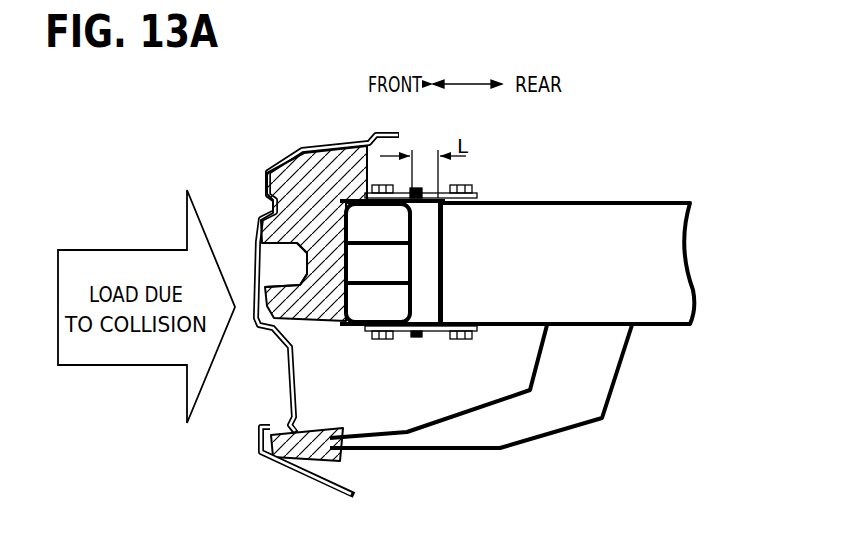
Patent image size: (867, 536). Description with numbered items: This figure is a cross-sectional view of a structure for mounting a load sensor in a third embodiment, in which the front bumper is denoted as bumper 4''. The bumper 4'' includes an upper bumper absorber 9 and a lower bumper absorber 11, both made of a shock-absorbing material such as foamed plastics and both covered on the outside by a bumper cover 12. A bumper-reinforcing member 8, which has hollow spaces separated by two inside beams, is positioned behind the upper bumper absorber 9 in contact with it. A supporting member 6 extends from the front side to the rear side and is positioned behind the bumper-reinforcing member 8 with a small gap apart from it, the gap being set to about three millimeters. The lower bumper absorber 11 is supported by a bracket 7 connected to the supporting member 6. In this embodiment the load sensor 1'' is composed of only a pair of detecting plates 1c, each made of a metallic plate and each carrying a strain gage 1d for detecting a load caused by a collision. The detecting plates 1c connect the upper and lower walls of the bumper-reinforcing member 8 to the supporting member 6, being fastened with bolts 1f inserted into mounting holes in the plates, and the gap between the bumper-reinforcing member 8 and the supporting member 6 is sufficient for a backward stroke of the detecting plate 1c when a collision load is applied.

The load sensor 1'' is at (449, 264).
The detecting plate 1c is at (440, 334).
The strain gage 1d is at (416, 340).
The bolt 1f is at (382, 340).
The bumper 4'' is at (248, 461).
The supporting member 6 is at (606, 202).
The bracket 7 is at (553, 437).
The bumper-reinforcing member 8 is at (326, 324).
The upper bumper absorber 9 is at (318, 148).
The lower bumper absorber 11 is at (348, 460).
The bumper cover 12 is at (265, 180).